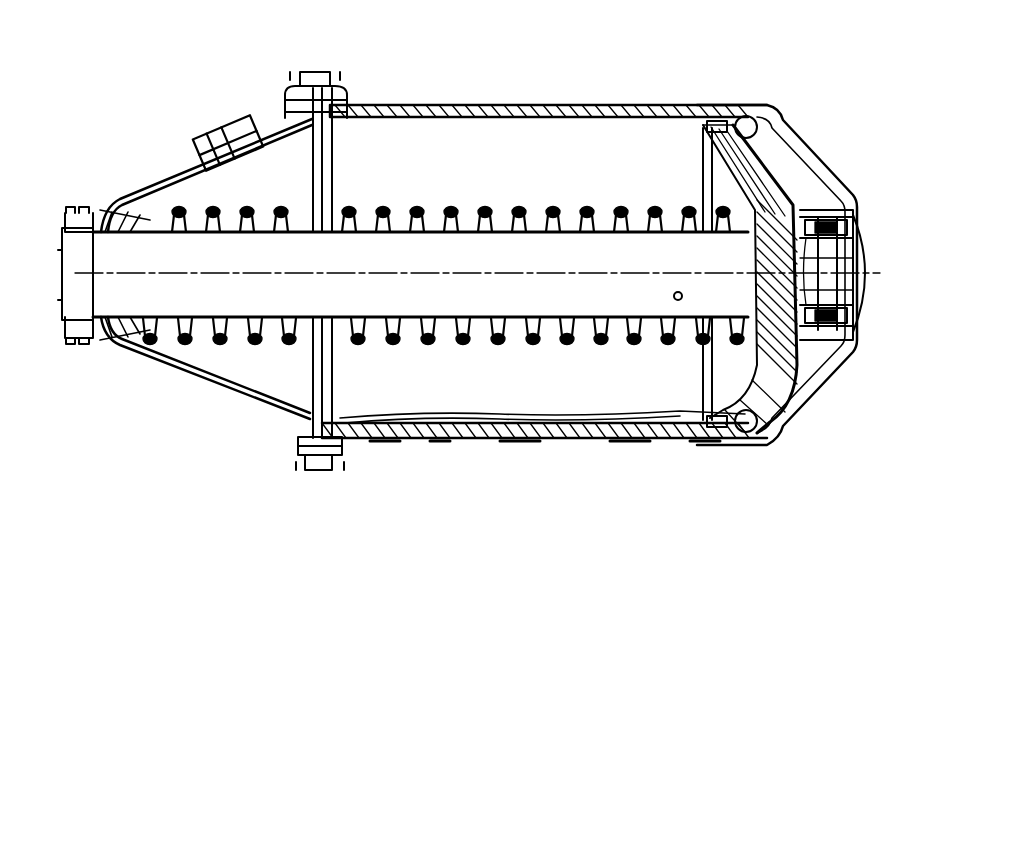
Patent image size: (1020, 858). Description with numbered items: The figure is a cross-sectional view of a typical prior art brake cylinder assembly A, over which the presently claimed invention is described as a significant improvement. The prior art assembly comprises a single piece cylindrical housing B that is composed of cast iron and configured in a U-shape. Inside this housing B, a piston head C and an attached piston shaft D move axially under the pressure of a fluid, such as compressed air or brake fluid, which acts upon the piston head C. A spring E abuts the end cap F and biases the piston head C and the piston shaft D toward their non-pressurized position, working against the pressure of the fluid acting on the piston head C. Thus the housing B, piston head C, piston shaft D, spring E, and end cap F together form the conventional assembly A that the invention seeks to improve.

The prior art brake cylinder assembly A is at (688, 73).
The cylindrical housing B is at (443, 100).
The piston head C is at (795, 365).
The piston shaft D is at (538, 289).
The spring E is at (527, 207).
The end cap F is at (117, 206).